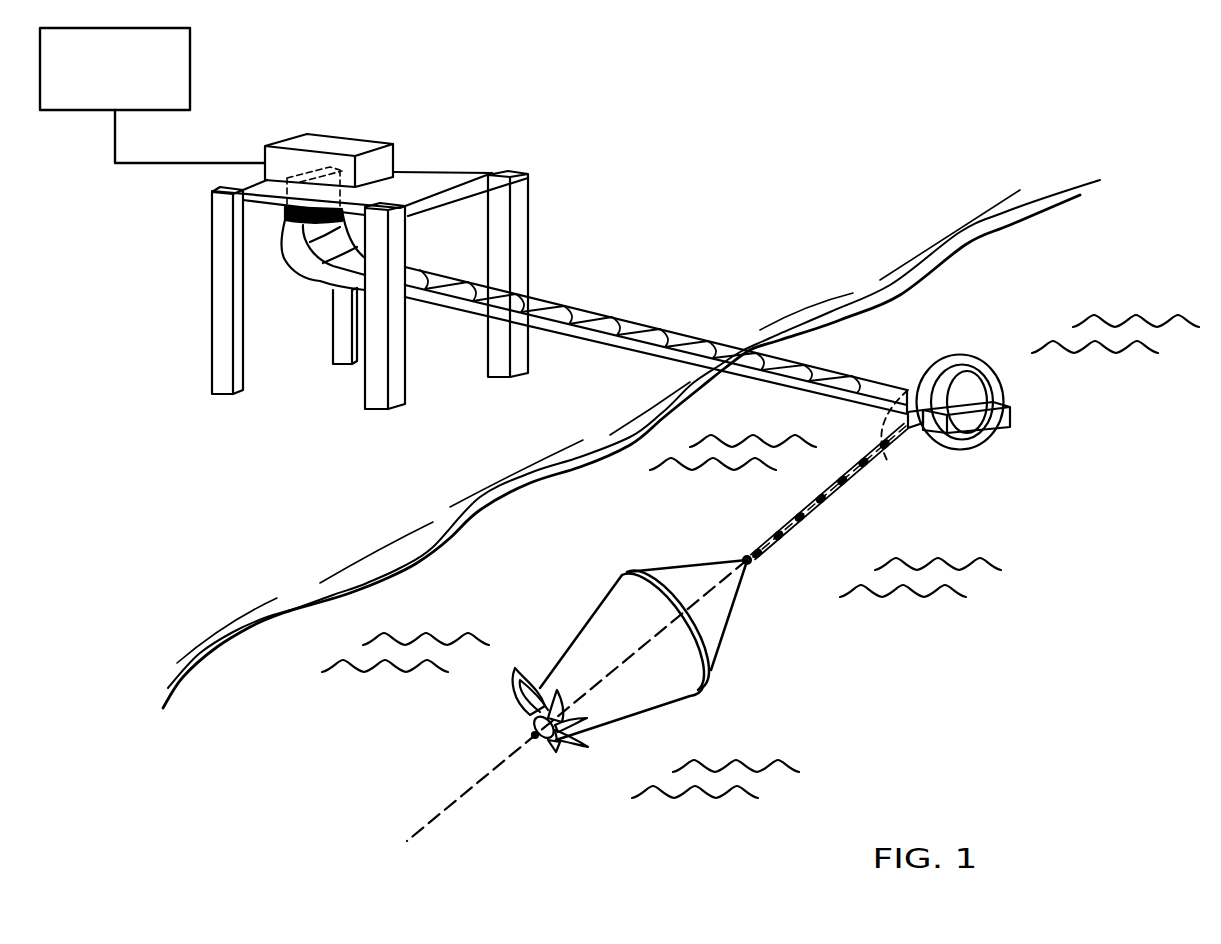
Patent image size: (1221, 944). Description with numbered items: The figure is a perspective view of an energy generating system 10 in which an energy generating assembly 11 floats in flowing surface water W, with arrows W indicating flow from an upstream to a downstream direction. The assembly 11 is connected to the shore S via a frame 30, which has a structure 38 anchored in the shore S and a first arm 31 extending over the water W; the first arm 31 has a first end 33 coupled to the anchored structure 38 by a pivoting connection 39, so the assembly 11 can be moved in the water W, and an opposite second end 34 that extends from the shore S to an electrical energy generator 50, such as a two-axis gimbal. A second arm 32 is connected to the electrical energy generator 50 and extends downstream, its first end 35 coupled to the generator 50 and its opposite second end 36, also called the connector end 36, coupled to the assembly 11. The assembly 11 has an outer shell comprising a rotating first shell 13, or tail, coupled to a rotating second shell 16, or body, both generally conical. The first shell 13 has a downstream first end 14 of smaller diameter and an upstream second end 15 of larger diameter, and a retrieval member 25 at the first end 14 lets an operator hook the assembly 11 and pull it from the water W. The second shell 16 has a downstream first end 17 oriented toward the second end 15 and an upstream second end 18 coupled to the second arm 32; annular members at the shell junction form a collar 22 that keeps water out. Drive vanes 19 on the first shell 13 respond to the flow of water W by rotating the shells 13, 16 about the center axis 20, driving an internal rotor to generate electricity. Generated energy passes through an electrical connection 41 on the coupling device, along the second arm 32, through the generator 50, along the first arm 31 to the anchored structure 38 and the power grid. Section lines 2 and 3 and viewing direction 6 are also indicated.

The energy generating system 10 is at (833, 226).
The energy generating assembly 11 is at (707, 712).
The first shell 13 is at (640, 692).
The first end 14 is at (542, 732).
The second end 15 is at (603, 679).
The second shell 16 is at (720, 633).
The first end 17 is at (657, 552).
The second end 18 is at (717, 547).
The drive vanes 19 is at (517, 697).
The center axis 20 is at (444, 806).
The collar 22 is at (627, 566).
The retrieval member 25 is at (530, 740).
The section line 2- 2 is at (797, 618).
The section line 3- 3 is at (908, 467).
The view direction 6 is at (773, 533).
The frame 30 is at (363, 218).
The first arm 31 is at (663, 327).
The second arm 32 is at (825, 502).
The first end 33 is at (427, 323).
The second end 34 is at (960, 406).
The first end 35 is at (829, 478).
The second end 36 is at (772, 567).
The structure 38 is at (523, 197).
The pivoting connection 39 is at (285, 220).
The electrical connection 41 is at (845, 485).
The electrical energy generator 50 is at (980, 443).
The shore S is at (338, 545).
The water W is at (1017, 290).